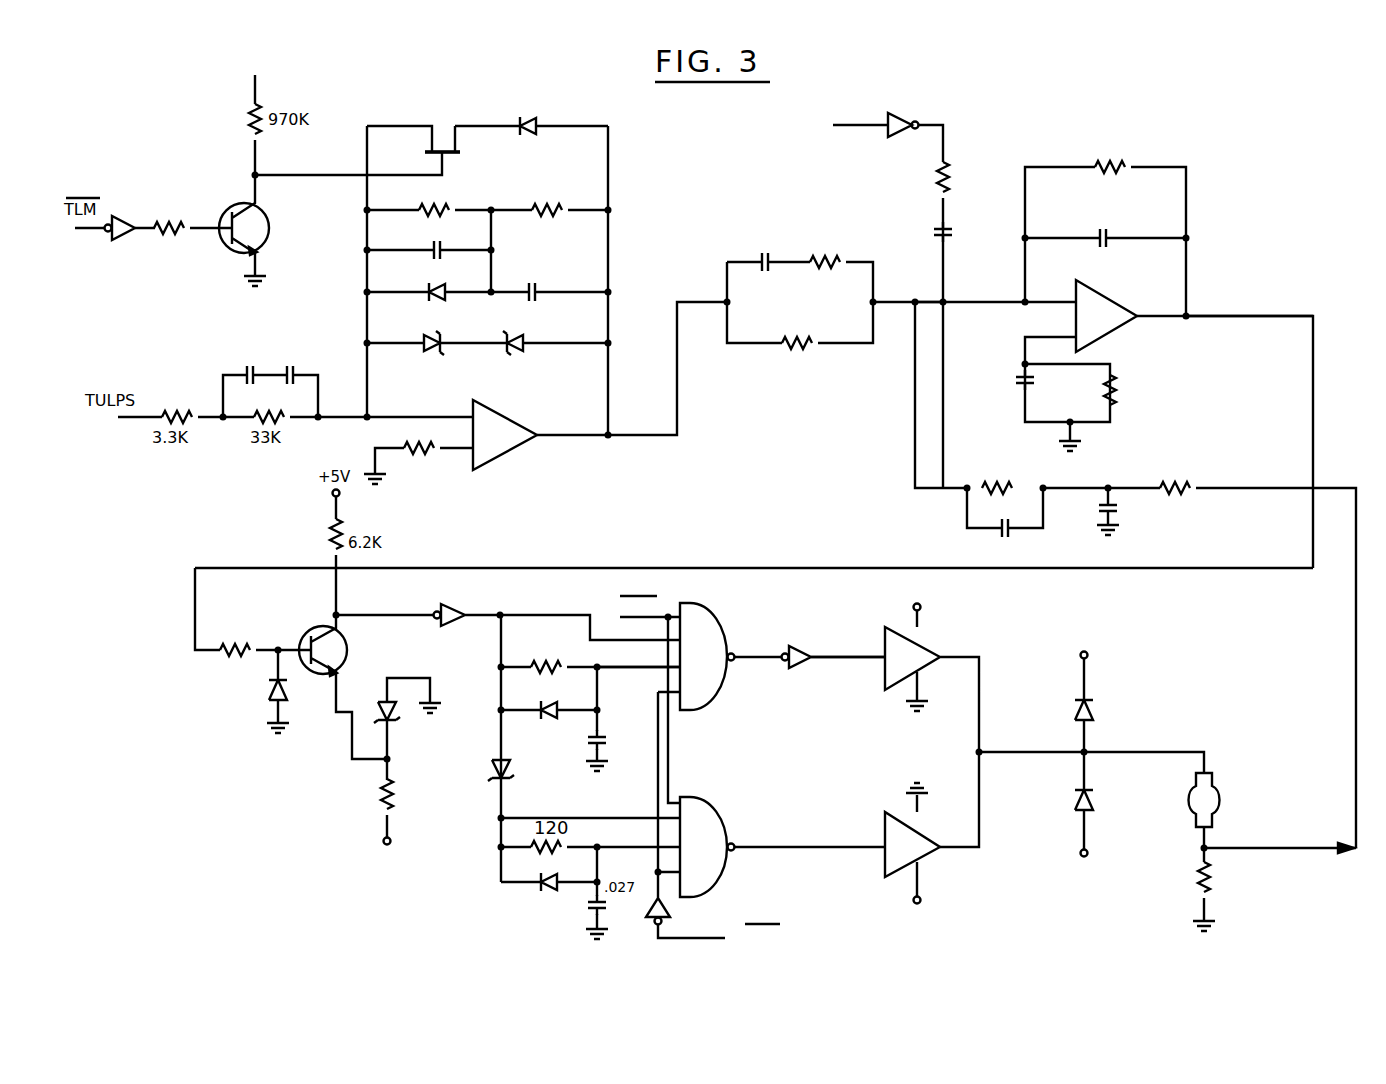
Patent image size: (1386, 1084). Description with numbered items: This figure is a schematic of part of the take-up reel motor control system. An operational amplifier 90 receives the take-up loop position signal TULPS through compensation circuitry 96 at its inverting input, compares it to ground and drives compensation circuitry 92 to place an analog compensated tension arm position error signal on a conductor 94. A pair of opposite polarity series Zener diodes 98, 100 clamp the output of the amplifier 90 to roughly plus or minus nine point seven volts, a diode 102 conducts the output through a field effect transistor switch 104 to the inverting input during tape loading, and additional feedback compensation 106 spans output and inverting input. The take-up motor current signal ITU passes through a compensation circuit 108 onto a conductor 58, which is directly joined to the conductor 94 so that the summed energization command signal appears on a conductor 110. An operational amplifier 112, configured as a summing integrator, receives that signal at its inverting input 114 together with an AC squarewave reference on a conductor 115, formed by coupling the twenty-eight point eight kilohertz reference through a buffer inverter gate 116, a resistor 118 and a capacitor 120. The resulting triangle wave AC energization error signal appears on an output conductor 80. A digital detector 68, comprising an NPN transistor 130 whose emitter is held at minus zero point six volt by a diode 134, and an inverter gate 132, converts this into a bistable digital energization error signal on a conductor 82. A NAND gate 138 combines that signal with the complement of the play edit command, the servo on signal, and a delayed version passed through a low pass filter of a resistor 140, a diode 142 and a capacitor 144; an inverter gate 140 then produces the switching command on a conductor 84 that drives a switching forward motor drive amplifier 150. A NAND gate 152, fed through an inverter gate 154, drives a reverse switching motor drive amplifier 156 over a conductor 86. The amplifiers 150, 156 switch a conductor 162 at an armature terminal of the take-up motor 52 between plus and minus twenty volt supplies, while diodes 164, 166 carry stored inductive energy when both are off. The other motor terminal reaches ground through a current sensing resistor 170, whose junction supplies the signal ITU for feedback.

The take-up motor 52 is at (1214, 788).
The conductor 58 is at (915, 397).
The digital detector 68 is at (408, 568).
The output conductor 80 is at (1233, 316).
The conductor 82 is at (492, 615).
The conductor 84 is at (848, 656).
The input conductor 86 is at (822, 848).
The operational amplifier 90 is at (510, 455).
The compensation circuitry 92 is at (778, 240).
The conductor 94 is at (900, 301).
The compensation circuitry 96 is at (210, 362).
The Zener diode 98 is at (441, 340).
The Zener diode 100 is at (523, 340).
The diode 102 is at (528, 118).
The field effect transistor switch 104 is at (458, 158).
The feedback compensation 106 is at (521, 258).
The compensation circuit 108 is at (1133, 524).
The conductor 110 is at (930, 305).
The operational amplifier 112 is at (1147, 354).
The inverting input 114 is at (1050, 300).
The conductor 115 is at (947, 268).
The buffer inverter gate 116 is at (912, 116).
The resistor 118 is at (950, 178).
The capacitor 120 is at (953, 230).
The NPN transistor 130 is at (314, 633).
The inverter gate 132 is at (449, 612).
The diode 134 is at (395, 712).
The NAND gate 138 is at (713, 628).
The inverter gate 140 is at (804, 640).
The diode 142 is at (549, 708).
The capacitor 144 is at (603, 735).
The switching forward motor drive amplifier 150 is at (931, 652).
The NAND gate 152 is at (712, 826).
The inverter gate 154 is at (510, 768).
The reverse switching motor drive amplifier 156 is at (882, 858).
The conductor 162 is at (1172, 752).
The diode 164 is at (1097, 798).
The diode 166 is at (1097, 716).
The current sensing resistor 170 is at (1208, 896).